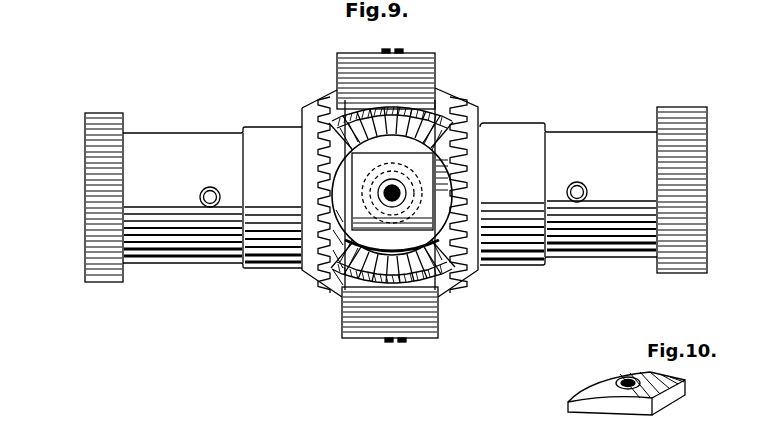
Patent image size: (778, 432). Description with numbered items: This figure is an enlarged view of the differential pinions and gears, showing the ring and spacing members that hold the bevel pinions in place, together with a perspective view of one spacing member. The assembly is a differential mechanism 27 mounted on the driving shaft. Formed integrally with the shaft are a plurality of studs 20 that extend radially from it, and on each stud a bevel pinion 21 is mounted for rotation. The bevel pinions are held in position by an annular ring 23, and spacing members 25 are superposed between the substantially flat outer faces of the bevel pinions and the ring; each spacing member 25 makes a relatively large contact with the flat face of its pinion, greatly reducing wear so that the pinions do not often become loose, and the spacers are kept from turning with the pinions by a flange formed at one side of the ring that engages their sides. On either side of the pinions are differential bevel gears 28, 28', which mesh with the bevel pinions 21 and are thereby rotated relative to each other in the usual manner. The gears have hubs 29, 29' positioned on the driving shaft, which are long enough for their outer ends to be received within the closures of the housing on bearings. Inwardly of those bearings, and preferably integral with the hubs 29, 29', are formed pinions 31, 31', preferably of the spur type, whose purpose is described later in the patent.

In FIG. 9, the stud 20 is at (398, 186).
In FIG. 9, the bevel pinion 21 is at (273, 268).
In FIG. 9, the annular ring 23 is at (420, 54).
In FIG. 9, the spacing member 25 is at (392, 191).
In FIG. 10, the spacing member 25 is at (592, 386).
In FIG. 9, the differential mechanism 27 is at (390, 326).
In FIG. 9, the differential bevel gear 28 is at (476, 195).
In FIG. 9, the differential bevel gear 28' is at (303, 195).
In FIG. 9, the hub 29 is at (568, 194).
In FIG. 9, the hub 29' is at (183, 198).
In FIG. 9, the pinion 31 is at (696, 190).
In FIG. 9, the pinion 31' is at (88, 197).